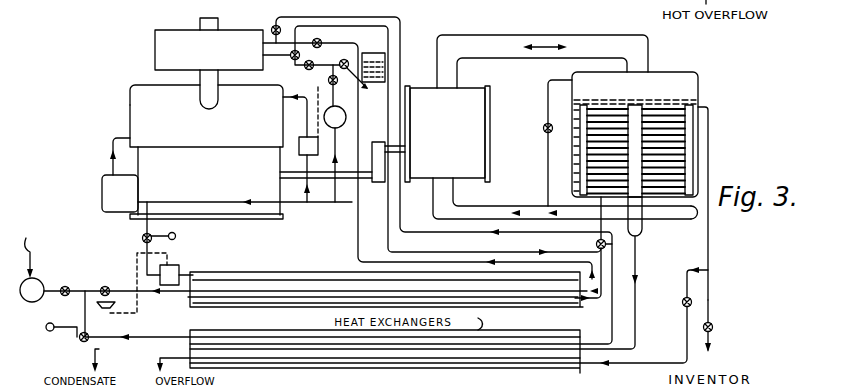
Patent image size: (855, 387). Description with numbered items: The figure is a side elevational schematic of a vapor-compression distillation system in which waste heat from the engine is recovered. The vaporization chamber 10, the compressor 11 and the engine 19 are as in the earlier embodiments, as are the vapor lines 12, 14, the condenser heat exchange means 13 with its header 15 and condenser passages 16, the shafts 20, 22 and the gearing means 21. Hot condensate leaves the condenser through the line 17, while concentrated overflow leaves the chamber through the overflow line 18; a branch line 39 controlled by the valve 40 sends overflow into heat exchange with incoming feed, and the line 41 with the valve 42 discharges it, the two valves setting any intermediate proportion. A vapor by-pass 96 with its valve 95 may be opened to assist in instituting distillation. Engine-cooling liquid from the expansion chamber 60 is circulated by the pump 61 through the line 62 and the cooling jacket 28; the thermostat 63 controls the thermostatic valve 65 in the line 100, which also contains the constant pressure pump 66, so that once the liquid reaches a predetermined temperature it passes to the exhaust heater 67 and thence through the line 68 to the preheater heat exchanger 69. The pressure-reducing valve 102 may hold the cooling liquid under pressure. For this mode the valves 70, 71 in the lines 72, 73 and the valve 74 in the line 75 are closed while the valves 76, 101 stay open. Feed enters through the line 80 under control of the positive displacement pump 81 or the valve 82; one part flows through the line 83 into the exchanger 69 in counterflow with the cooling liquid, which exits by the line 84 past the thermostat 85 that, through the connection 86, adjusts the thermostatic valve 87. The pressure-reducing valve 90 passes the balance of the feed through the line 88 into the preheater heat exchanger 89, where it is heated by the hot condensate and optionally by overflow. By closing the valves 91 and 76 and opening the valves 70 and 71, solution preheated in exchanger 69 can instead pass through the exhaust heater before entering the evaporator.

The vaporization chamber 10 is at (700, 89).
The compressor 11 is at (478, 138).
The vapor line 12 is at (497, 43).
The condenser heat exchange means 13 is at (685, 152).
The vapor line 14 is at (448, 191).
The header 15 is at (672, 217).
The condenser passages 16 is at (662, 108).
The condensate line 17 is at (638, 293).
The overflow line 18 is at (710, 247).
The engine 19 is at (206, 116).
The shaft 20 is at (293, 172).
The gearing means 21 is at (380, 183).
The shaft 22 is at (405, 148).
The cooling jacket 28 is at (130, 105).
The branch line 39 is at (640, 360).
The valve 40 is at (680, 307).
The line 41 is at (710, 302).
The valve 42 is at (714, 327).
The expansion chamber 60 is at (386, 64).
The pump 61 is at (102, 190).
The line 62 is at (183, 202).
The thermostat 63 is at (299, 145).
The thermostatic valve 65 is at (336, 85).
The constant pressure pump 66 is at (346, 118).
The exhaust heater 67 is at (157, 47).
The line 68 is at (358, 242).
The preheater heat exchanger 69 is at (246, 272).
The valve 70 is at (272, 26).
The valve 71 is at (301, 55).
The line 72 is at (300, 17).
The line 73 is at (376, 26).
The valve 74 is at (350, 60).
The line 75 is at (370, 87).
The valve 76 is at (320, 38).
The feed line 80 is at (32, 261).
The positive displacement pump 81 is at (46, 328).
The valve 82 is at (63, 282).
The line 83 is at (150, 297).
The line 84 is at (193, 276).
The thermostat 85 is at (180, 263).
The connection 86 is at (136, 258).
The thermostatic valve 87 is at (106, 283).
The line 88 is at (610, 323).
The preheater heat exchanger 89 is at (263, 356).
The pressure-reducing valve 90 is at (79, 340).
The valve 91 is at (638, 246).
The valve 95 is at (541, 137).
The vapor by-pass 96 is at (548, 96).
The line 100 is at (326, 90).
The valve 101 is at (314, 62).
The pressure-reducing valve 102 is at (140, 236).